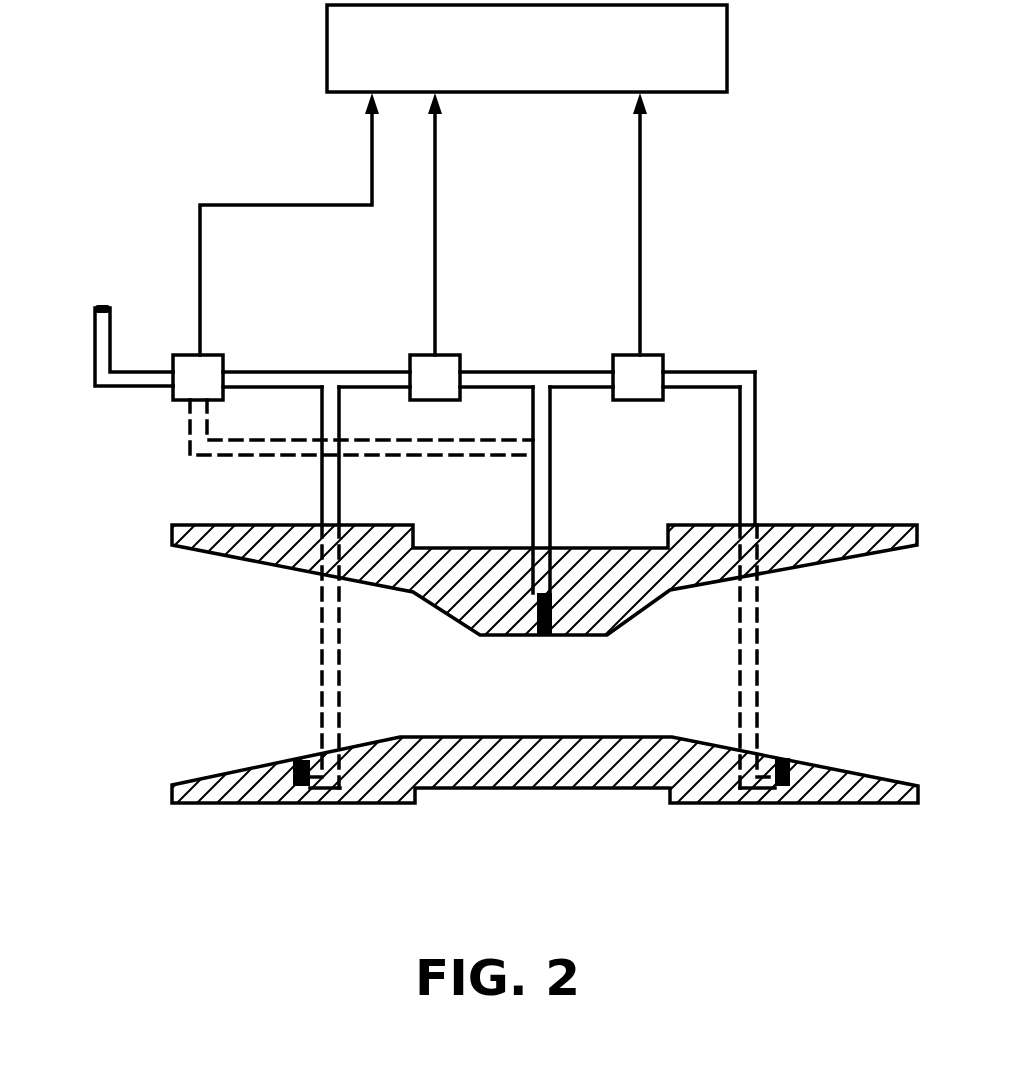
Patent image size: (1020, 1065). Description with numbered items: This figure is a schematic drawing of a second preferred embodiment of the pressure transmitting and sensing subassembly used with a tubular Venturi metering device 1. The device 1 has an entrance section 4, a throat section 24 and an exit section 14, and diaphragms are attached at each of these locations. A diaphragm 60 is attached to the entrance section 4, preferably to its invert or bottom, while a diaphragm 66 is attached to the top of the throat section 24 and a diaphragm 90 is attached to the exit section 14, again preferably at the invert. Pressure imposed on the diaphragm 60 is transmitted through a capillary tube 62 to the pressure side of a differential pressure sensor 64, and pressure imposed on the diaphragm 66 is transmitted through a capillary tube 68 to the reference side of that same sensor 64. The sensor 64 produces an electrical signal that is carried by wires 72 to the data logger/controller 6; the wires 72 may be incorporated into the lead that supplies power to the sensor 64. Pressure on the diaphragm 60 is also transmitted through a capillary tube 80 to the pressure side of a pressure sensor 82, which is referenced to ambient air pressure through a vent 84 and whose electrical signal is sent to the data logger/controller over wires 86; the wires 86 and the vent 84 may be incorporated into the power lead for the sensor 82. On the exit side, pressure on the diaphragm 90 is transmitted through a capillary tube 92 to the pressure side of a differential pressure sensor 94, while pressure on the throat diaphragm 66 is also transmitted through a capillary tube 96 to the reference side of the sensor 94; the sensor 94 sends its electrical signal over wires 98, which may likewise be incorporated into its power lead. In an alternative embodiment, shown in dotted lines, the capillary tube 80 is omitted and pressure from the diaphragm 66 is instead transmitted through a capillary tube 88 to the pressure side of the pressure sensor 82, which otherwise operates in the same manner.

The tubular Venturi metering device 1 is at (172, 641).
The entrance section 4 is at (530, 770).
The data logger/controller 6 is at (550, 61).
The exit section 14 is at (820, 786).
The throat section 24 is at (630, 601).
The diaphragm 60 is at (292, 752).
The capillary tube 62 is at (368, 370).
The differential pressure sensor 64 is at (451, 392).
The diaphragm 66 is at (566, 646).
The capillary tube 68 is at (487, 370).
The wires 72 is at (450, 248).
The capillary tube 80 is at (266, 370).
The pressure sensor 82 is at (214, 392).
The vent 84 is at (100, 345).
The wires 86 is at (323, 196).
The capillary tube 88 is at (427, 460).
The diaphragm 90 is at (788, 750).
The capillary tube 92 is at (781, 580).
The differential pressure sensor 94 is at (654, 392).
The capillary tube 96 is at (581, 370).
The wires 98 is at (655, 264).